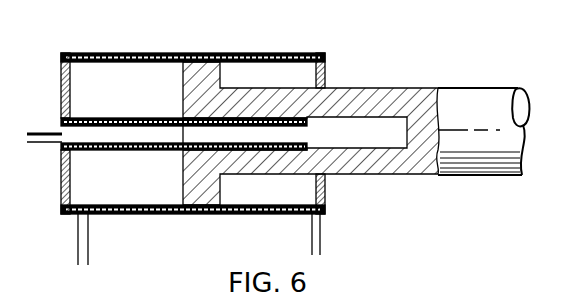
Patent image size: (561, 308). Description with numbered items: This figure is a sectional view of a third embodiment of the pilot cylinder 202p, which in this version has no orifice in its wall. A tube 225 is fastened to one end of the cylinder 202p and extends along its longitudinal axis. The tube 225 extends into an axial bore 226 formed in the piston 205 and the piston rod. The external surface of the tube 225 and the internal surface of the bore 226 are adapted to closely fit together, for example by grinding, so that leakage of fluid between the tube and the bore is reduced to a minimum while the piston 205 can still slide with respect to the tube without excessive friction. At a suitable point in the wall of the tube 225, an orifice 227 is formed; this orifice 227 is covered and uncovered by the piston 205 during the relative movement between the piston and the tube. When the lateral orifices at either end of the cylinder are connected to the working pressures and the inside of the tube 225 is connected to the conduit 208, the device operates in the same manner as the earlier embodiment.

The pilot cylinder 202p is at (147, 53).
The piston 205 is at (227, 53).
The conduit 208 is at (33, 132).
The tube 225 is at (100, 119).
The axial bore 226 is at (353, 113).
The orifice 227 is at (182, 151).